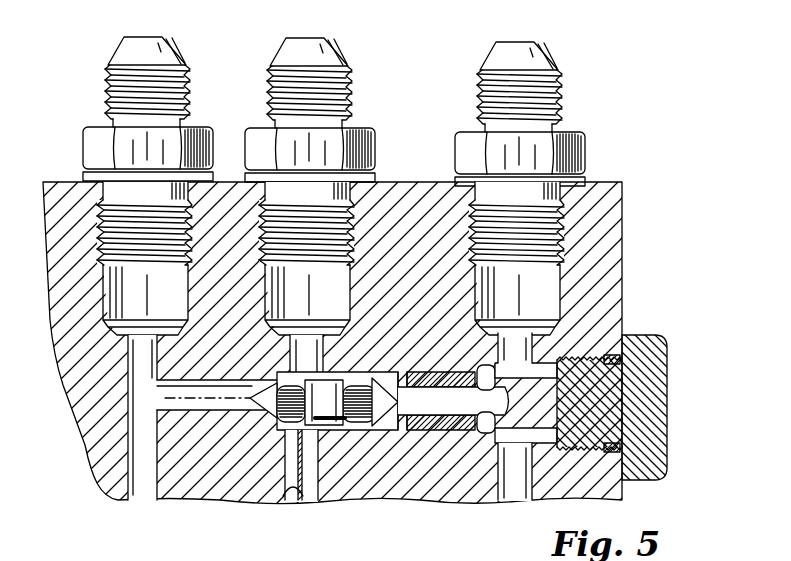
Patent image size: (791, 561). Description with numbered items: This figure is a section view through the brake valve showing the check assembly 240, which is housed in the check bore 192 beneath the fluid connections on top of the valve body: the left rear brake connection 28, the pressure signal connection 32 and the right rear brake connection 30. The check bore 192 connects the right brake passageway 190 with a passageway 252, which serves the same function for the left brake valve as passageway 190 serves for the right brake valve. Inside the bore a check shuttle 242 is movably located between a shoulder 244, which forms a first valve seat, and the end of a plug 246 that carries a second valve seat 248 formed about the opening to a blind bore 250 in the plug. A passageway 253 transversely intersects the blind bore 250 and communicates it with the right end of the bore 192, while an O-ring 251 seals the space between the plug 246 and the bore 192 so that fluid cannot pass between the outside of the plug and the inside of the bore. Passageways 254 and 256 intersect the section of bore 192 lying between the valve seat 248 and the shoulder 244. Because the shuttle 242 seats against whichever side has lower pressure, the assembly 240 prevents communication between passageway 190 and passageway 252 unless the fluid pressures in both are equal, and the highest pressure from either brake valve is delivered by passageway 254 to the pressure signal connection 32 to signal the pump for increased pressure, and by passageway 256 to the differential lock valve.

The left rear brake connection 28 is at (123, 46).
The pressure signal connection 32 is at (288, 52).
The right rear brake connection 30 is at (486, 62).
The check assembly 240 is at (402, 290).
The passageway 252 is at (162, 346).
The passageway 254 is at (323, 348).
The shoulder 244 is at (268, 416).
The check shuttle 242 is at (353, 430).
The check bore 192 is at (399, 431).
The second valve seat 248 is at (400, 383).
The blind bore 250 is at (450, 388).
The O-ring 251 is at (425, 433).
The passageway 253 is at (486, 447).
The right brake passageway 190 is at (529, 347).
The plug 246 is at (648, 336).
The passageway 256 is at (300, 500).